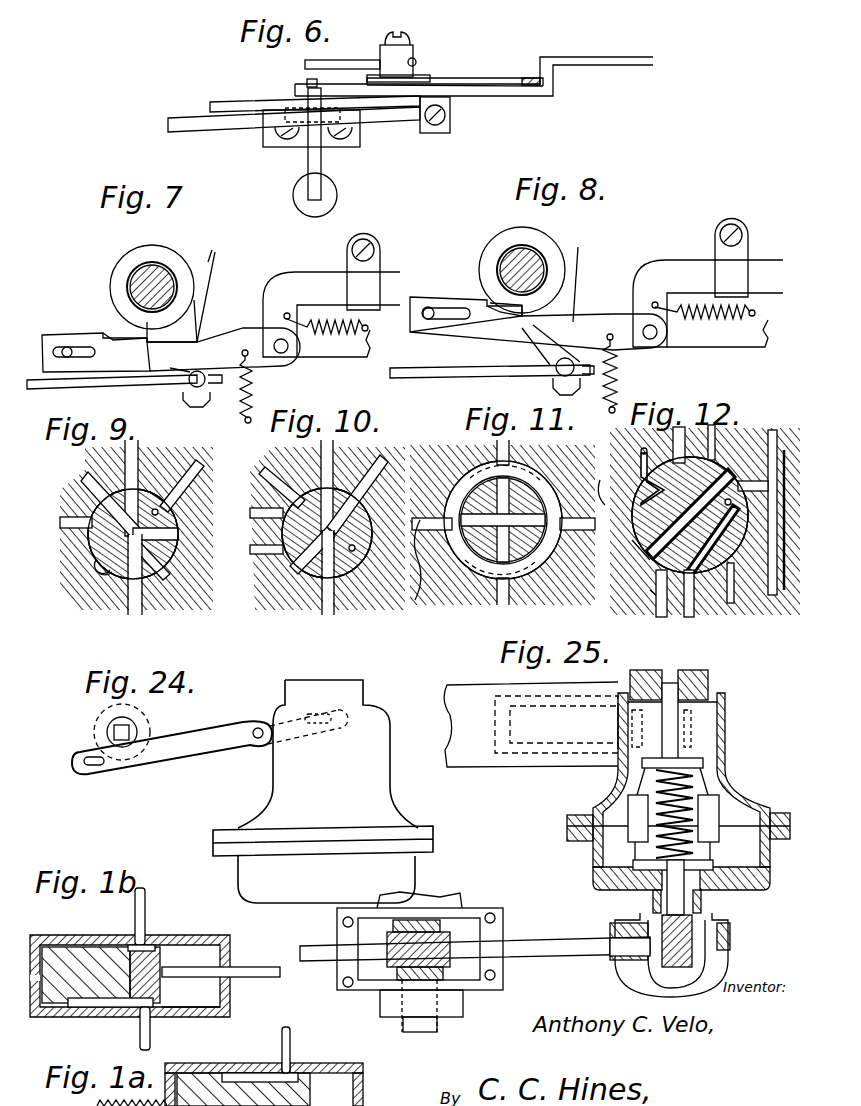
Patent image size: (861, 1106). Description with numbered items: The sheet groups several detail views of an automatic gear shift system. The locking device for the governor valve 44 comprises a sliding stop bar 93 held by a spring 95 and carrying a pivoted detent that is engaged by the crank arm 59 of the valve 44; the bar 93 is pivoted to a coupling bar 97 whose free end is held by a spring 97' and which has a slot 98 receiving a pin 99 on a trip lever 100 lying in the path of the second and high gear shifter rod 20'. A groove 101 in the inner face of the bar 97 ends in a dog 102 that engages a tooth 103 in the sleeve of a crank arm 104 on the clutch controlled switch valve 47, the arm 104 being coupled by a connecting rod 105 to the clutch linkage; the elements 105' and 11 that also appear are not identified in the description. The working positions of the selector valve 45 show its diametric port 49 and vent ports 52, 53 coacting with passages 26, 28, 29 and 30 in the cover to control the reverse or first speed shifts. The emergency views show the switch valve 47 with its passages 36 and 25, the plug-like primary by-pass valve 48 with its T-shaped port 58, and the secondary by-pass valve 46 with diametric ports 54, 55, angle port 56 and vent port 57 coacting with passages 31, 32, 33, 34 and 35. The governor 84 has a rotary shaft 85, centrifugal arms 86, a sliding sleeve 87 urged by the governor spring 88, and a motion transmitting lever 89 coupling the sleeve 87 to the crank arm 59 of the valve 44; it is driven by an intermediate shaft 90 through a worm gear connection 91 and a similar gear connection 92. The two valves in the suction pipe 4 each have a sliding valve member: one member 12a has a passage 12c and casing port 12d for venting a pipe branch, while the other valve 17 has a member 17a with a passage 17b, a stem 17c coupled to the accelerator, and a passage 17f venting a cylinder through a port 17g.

In FIG. 6, the stop bar 93 is at (626, 56).
In FIG. 7, the stop bar 93 is at (323, 272).
In FIG. 8, the stop bar 93 is at (685, 260).
In FIG. 6, the coupling bar 97 is at (424, 66).
In FIG. 7, the coupling bar 97 is at (223, 334).
In FIG. 8, the coupling bar 97 is at (538, 311).
In FIG. 6, the pin 99 is at (306, 82).
In FIG. 7, the pin 99 is at (66, 356).
In FIG. 8, the pin 99 is at (427, 307).
In FIG. 6, the trip lever 100 is at (322, 168).
In FIG. 6, the second and high gear shifter rod 20' is at (338, 195).
In FIG. 7, the crank arm 104 is at (126, 264).
In FIG. 8, the crank arm 104 is at (552, 250).
In FIG. 7, the tooth or recess 103 is at (147, 320).
In FIG. 8, the tooth or recess 103 is at (547, 270).
In FIG. 7, the groove or recess 101 is at (217, 296).
In FIG. 8, the groove or recess 101 is at (597, 282).
In FIG. 7, the slot 98 is at (78, 345).
In FIG. 8, the slot 98 is at (445, 308).
In FIG. 7, the dog or shoulder 102 is at (138, 336).
In FIG. 8, the dog or shoulder 102 is at (502, 321).
In FIG. 8, the connecting rod 105 is at (490, 382).
In FIG. 7, the rod 105' is at (112, 391).
In FIG. 7, the spring 95 is at (325, 346).
In FIG. 8, the spring 95 is at (712, 340).
In FIG. 7, the spring 97' is at (269, 389).
In FIG. 8, the spring 97' is at (591, 381).
In FIG. 9, the passage 29 is at (140, 448).
In FIG. 10, the passage 29 is at (335, 450).
In FIG. 9, the passage 28 is at (189, 478).
In FIG. 10, the passage 28 is at (366, 489).
In FIG. 9, the passage 26 is at (80, 492).
In FIG. 10, the passage 26 is at (268, 470).
In FIG. 9, the vent or relief port 52 is at (160, 512).
In FIG. 9, the selector valve 45 is at (92, 545).
In FIG. 10, the selector valve 45 is at (285, 552).
In FIG. 9, the diametric port 49 is at (100, 565).
In FIG. 9, the vent or relief port 53 is at (103, 578).
In FIG. 10, the vent or relief port 53 is at (285, 530).
In FIG. 9, the passage 30 is at (135, 610).
In FIG. 10, the passage 30 is at (325, 608).
In FIG. 12, the passage 30 is at (772, 455).
In FIG. 10, the passage 31 is at (275, 512).
In FIG. 12, the passage 31 is at (720, 430).
In FIG. 11, the primary emergency by-pass valve 48 is at (455, 482).
In FIG. 11, the passage 25 is at (510, 460).
In FIG. 12, the passage 25 is at (672, 440).
In FIG. 11, the clutch controlled switch valve 47 is at (528, 472).
In FIG. 11, the main suction passage 36 is at (440, 590).
In FIG. 11, the T-shaped port 58 is at (497, 585).
In FIG. 12, the angle port 56 is at (634, 528).
In FIG. 12, the vent or relief port 57 is at (775, 435).
In FIG. 12, the passage 32 is at (632, 498).
In FIG. 12, the secondary emergency by-pass valve 46 is at (730, 470).
In FIG. 12, the diametric port 55 is at (655, 560).
In FIG. 12, the diametric port 54 is at (660, 600).
In FIG. 12, the passage 35 is at (662, 618).
In FIG. 12, the passage 34 is at (690, 618).
In FIG. 12, the passage 33 is at (732, 603).
In FIG. 24, the governor valve 44 is at (143, 708).
In FIG. 24, the motion transmitting lever 89 is at (212, 738).
In FIG. 24, the crank arm 59 is at (92, 757).
In FIG. 24, the centrifugal governor 84 is at (250, 790).
In FIG. 25, the centrifugal governor 84 is at (595, 800).
In FIG. 25, the sleeve 87 is at (705, 763).
In FIG. 25, the rotary shaft 85 is at (690, 785).
In FIG. 25, the governor weights or arms 86 is at (720, 812).
In FIG. 25, the governor spring 88 is at (640, 820).
In FIG. 25, the gear housing 11 is at (432, 897).
In FIG. 25, the intermediate shaft 90 is at (565, 941).
In FIG. 25, the worm gear connection 91 is at (388, 966).
In FIG. 25, the gear connection 92 is at (695, 943).
In FIG. 1B, the valve 17 is at (200, 935).
In FIG. 1B, the sliding valve member 17a is at (83, 955).
In FIG. 1B, the passage 17b is at (118, 1008).
In FIG. 1B, the stem 17c is at (265, 967).
In FIG. 1B, the passage 17f is at (105, 1008).
In FIG. 1B, the port 17g is at (190, 1010).
In FIG. 1B, the pipe 4 is at (146, 906).
In FIG. 1A, the pipe 4 is at (291, 1036).
In FIG. 1A, the sliding valve member 12a is at (197, 1078).
In FIG. 1A, the passage 12c is at (257, 1074).
In FIG. 1A, the port 12d is at (330, 1063).